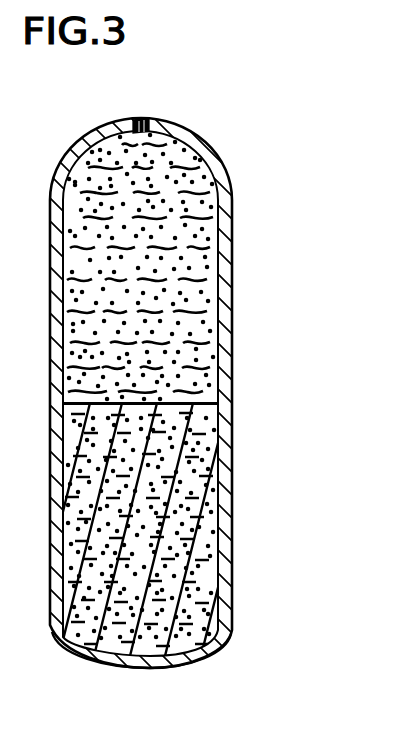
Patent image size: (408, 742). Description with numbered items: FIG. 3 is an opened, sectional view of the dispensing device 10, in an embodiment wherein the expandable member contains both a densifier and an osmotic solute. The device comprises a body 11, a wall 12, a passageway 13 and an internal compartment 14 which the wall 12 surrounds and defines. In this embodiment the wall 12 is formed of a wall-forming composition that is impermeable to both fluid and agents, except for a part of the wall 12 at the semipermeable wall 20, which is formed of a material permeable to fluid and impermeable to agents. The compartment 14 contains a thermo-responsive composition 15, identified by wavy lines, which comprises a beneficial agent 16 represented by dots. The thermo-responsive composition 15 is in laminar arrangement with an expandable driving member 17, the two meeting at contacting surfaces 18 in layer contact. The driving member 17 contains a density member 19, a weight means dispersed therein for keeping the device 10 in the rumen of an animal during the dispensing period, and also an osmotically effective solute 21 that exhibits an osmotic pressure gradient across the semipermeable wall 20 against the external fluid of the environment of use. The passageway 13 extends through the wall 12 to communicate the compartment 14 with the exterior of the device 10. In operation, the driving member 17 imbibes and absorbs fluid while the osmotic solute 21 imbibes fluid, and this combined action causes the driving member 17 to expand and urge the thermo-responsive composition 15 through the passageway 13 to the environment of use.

The dispensing device 10 is at (217, 137).
The body 11 is at (232, 247).
The wall 12 is at (226, 300).
The passageway 13 is at (149, 118).
The internal compartment 14 is at (205, 385).
The thermo-responsive composition 15 is at (93, 192).
The beneficial agent 16 is at (75, 325).
The expandable driving member 17 is at (185, 501).
The contacting surfaces 18 is at (63, 418).
The density member 19 is at (73, 462).
The semipermeable wall 20 is at (80, 657).
The osmotically effective solute 21 is at (68, 580).